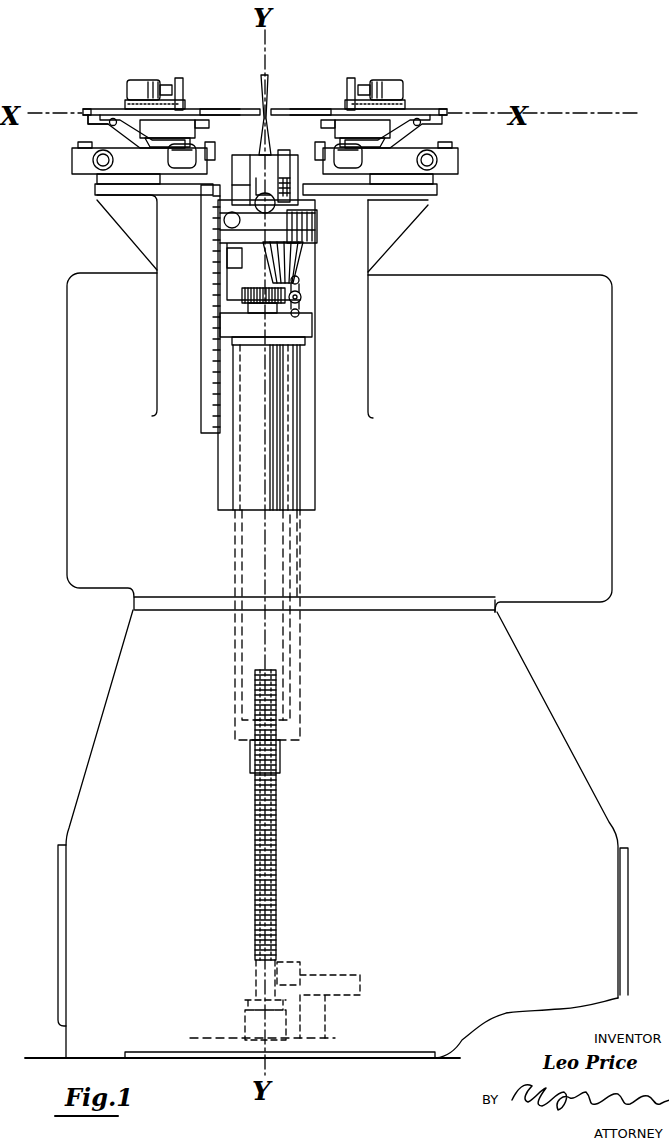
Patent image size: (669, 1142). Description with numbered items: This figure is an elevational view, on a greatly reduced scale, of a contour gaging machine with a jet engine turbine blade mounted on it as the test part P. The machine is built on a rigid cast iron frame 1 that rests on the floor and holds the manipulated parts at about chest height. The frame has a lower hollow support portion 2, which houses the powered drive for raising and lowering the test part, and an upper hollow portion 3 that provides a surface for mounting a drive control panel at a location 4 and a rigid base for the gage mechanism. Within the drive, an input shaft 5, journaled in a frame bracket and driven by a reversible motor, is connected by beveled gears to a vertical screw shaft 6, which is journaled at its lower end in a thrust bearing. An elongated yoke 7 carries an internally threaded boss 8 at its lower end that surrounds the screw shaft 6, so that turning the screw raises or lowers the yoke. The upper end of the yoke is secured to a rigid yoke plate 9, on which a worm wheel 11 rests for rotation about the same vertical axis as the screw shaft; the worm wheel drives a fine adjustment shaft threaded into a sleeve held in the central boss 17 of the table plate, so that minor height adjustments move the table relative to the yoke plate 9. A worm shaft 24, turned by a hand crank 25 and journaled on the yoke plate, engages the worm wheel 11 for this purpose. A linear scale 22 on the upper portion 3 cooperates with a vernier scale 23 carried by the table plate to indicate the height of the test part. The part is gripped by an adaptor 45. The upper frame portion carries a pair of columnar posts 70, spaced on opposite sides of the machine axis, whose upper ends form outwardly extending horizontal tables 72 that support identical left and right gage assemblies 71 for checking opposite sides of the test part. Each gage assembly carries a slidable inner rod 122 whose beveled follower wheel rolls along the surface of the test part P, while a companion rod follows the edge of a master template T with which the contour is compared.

The frame 1 is at (115, 628).
The lower hollow support portion 2 is at (93, 742).
The upper hollow portion 3 is at (67, 492).
The control panel location 4 is at (497, 439).
The input shaft 5 is at (350, 976).
The screw shaft 6 is at (278, 828).
The yoke 7 is at (300, 648).
The internally threaded boss 8 is at (281, 766).
The yoke plate 9 is at (235, 330).
The worm wheel 11 is at (242, 298).
The central boss 17 is at (303, 268).
The linear scale 22 is at (201, 408).
The vernier scale 23 is at (222, 263).
The worm shaft 24 is at (301, 305).
The hand crank 25 is at (300, 283).
The adaptor 45 is at (303, 172).
The columnar posts 70 is at (160, 232).
The gage assemblies 71 is at (118, 95).
The horizontal tables 72 is at (97, 185).
The inner rod 122 is at (238, 108).
The test part P is at (272, 80).
The master template T is at (86, 123).